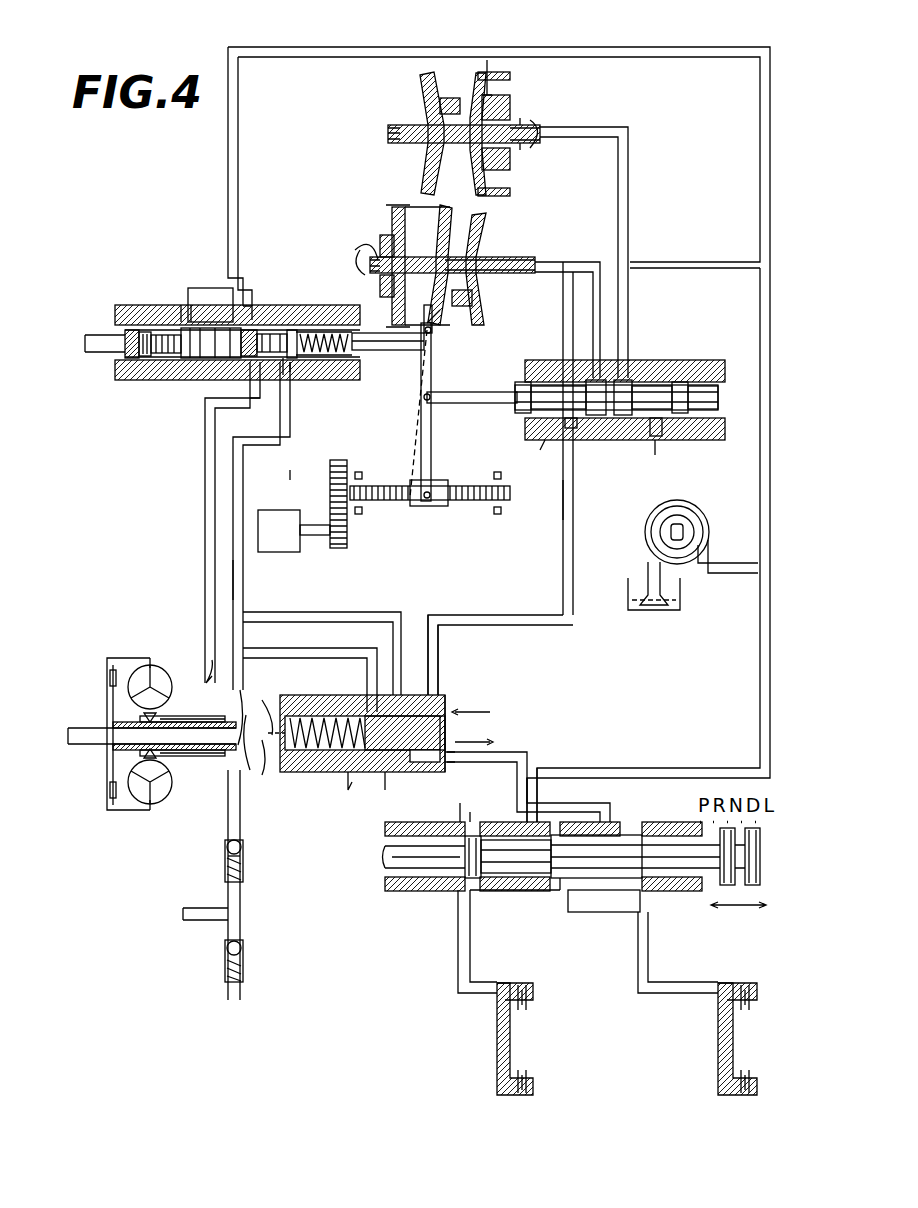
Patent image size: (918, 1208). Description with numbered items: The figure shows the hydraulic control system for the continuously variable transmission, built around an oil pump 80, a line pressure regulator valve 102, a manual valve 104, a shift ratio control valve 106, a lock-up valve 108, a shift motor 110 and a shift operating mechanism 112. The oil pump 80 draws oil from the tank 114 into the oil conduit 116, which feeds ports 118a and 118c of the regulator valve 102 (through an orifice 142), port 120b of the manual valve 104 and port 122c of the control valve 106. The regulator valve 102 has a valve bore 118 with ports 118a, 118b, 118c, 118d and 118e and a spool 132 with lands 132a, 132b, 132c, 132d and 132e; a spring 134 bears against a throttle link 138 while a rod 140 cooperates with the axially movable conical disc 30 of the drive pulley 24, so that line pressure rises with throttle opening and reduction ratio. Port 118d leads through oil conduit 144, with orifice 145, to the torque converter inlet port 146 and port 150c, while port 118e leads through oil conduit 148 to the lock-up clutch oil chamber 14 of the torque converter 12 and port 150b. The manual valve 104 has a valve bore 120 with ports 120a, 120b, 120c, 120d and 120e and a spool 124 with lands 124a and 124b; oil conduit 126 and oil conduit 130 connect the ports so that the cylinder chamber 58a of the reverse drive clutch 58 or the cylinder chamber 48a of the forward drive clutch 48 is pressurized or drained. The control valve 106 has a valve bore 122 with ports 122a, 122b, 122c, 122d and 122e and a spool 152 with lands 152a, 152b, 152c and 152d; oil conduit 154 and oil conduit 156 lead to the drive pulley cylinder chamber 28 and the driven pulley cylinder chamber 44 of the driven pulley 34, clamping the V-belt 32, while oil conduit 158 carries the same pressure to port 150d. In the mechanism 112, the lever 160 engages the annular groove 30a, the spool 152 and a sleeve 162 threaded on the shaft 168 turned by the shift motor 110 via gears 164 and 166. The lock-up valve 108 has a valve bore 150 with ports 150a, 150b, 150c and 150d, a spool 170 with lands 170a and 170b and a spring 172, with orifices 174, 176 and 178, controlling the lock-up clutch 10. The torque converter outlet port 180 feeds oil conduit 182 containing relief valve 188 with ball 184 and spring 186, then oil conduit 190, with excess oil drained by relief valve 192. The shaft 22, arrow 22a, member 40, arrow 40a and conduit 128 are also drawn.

The lock-up clutch 10 is at (113, 680).
The torque converter 12 is at (102, 783).
The lock-up clutch oil chamber 14 is at (110, 718).
The element 22 is at (495, 260).
The rotation arrow 22a is at (355, 252).
The drive pulley 24 is at (385, 245).
The drive pulley cylinder chamber 28 is at (390, 290).
The axially movable conical disc 30 is at (432, 318).
The annular groove 30a is at (430, 215).
The V-belt 32 is at (448, 95).
The driven pulley 34 is at (487, 58).
The driven shaft 40 is at (398, 128).
The rotation 40a is at (535, 125).
The driven pulley cylinder chamber 44 is at (505, 100).
The forward drive multiple disc clutch 48 is at (741, 992).
The cylinder chamber of forward drive clutch 48a is at (722, 990).
The reverse drive multiple disc clutch 58 is at (545, 1002).
The cylinder chamber of reverse drive clutch 58a is at (500, 992).
The oil pump 80 is at (646, 538).
The line pressure regulator valve 102 is at (252, 312).
The manual valve 104 is at (665, 805).
The shift ratio control valve 106 is at (572, 460).
The lock-up valve 108 is at (402, 788).
The shift motor 110 is at (275, 510).
The shift operating mechanism 112 is at (427, 456).
The tank 114 is at (672, 592).
The oil conduit 116 is at (758, 500).
The valve bore 118 is at (233, 507).
The port 118a is at (165, 328).
The port 118b is at (212, 300).
The port 118c is at (246, 300).
The port 118d is at (265, 330).
The port 118e is at (318, 330).
The valve bore 120 is at (505, 880).
The port 120a is at (400, 822).
The port 120b is at (530, 830).
The port 120c is at (562, 880).
The port 120d is at (618, 830).
The port 120e is at (648, 880).
The valve bore 122 is at (672, 425).
The port 122a is at (545, 440).
The port 122b is at (566, 440).
The port 122c is at (612, 428).
The port 122d is at (624, 378).
The port 122e is at (658, 378).
The spool 124 is at (400, 870).
The land 124a is at (468, 878).
The land 124b is at (597, 880).
The oil conduit 126 is at (522, 790).
The conduit 128 is at (458, 965).
The oil conduit 130 is at (638, 975).
The spool 132 is at (190, 370).
The land 132a is at (145, 360).
The land 132b is at (175, 358).
The land 132c is at (283, 380).
The land 132d is at (290, 375).
The land 132e is at (292, 360).
The spring 134 is at (138, 318).
The throttle link 138 is at (98, 330).
The rod 140 is at (378, 352).
The orifice 142 is at (186, 318).
The oil conduit 144 is at (205, 500).
The orifice 145 is at (225, 410).
The inlet port of the torque converter 146 is at (178, 715).
The oil conduit 148 is at (252, 475).
The valve bore 150 is at (295, 765).
The port 150a is at (350, 716).
The port 150b is at (420, 790).
The port 150c is at (420, 690).
The port 150d is at (446, 770).
The spool 152 is at (548, 382).
The land 152a is at (520, 382).
The land 152b is at (590, 375).
The land 152c is at (628, 425).
The land 152d is at (700, 380).
The oil conduit 154 is at (567, 262).
The oil conduit 156 is at (628, 196).
The oil conduit 158 is at (567, 538).
The lever 160 is at (420, 395).
The sleeve 162 is at (440, 506).
The gear 164 is at (340, 528).
The gear 166 is at (330, 462).
The shaft 168 is at (382, 485).
The spool 170 is at (368, 690).
The land 170a is at (325, 760).
The land 170b is at (510, 790).
The spring 172 is at (285, 718).
The orifice 174 is at (372, 613).
The orifice 176 is at (480, 615).
The orifice 178 is at (348, 772).
The torque converter outlet port 180 is at (212, 757).
The oil conduit 182 is at (240, 820).
The ball 184 is at (242, 850).
The spring 186 is at (243, 870).
The relief valve 188 is at (216, 865).
The oil conduit 190 is at (210, 915).
The relief valve 192 is at (244, 975).